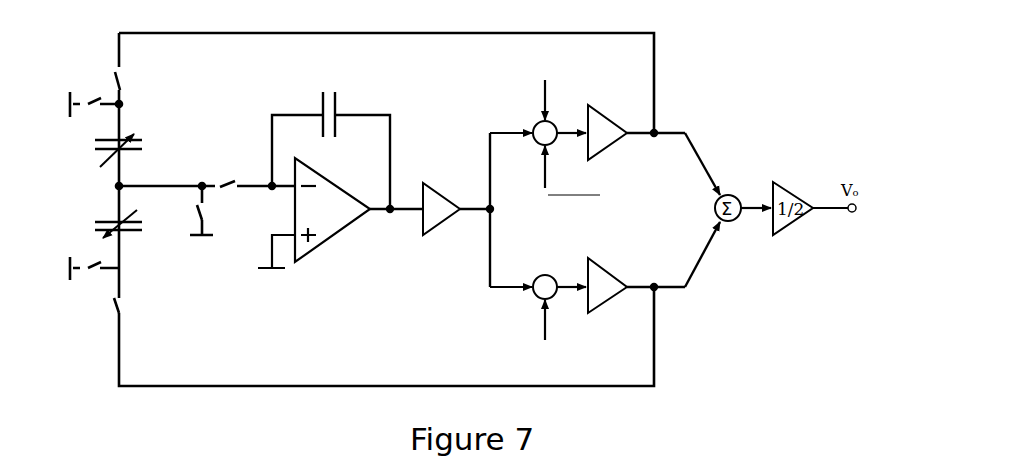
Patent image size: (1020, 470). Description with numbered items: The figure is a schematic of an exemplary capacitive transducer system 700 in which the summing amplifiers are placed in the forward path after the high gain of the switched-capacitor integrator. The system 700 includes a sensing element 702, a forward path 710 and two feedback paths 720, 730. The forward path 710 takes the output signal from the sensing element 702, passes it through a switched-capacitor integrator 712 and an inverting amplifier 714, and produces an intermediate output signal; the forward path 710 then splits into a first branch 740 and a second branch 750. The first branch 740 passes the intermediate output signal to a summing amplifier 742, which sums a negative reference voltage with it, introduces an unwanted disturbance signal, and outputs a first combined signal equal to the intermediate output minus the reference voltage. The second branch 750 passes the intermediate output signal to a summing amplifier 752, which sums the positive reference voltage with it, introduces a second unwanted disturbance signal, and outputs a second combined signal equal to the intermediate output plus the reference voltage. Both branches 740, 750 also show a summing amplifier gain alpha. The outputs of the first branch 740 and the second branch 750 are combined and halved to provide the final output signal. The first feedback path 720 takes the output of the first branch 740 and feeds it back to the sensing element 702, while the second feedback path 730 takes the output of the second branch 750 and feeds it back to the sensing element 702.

The system 700 is at (772, 116).
The sensing element 702 is at (80, 190).
The forward path 710 is at (343, 195).
The switched-capacitor integrator 712 is at (349, 251).
The inverting amplifier 714 is at (430, 232).
The first feedback path 720 is at (604, 118).
The second feedback path 730 is at (615, 297).
The first branch 740 is at (584, 86).
The summing amplifier 742 is at (533, 126).
The second branch 750 is at (597, 328).
The summing amplifier 752 is at (540, 276).